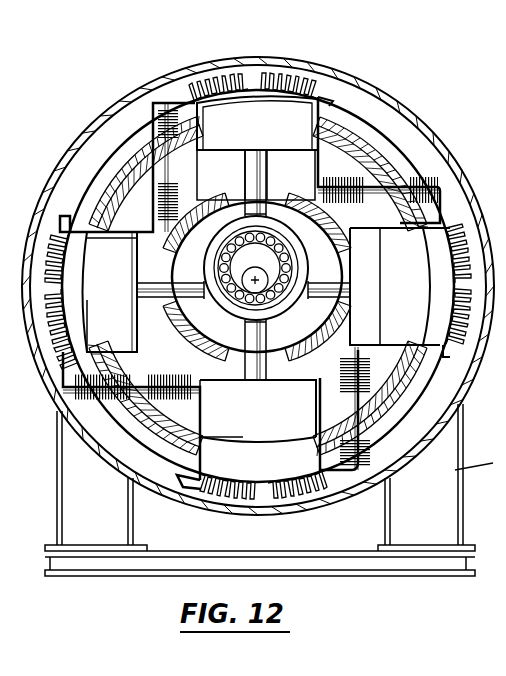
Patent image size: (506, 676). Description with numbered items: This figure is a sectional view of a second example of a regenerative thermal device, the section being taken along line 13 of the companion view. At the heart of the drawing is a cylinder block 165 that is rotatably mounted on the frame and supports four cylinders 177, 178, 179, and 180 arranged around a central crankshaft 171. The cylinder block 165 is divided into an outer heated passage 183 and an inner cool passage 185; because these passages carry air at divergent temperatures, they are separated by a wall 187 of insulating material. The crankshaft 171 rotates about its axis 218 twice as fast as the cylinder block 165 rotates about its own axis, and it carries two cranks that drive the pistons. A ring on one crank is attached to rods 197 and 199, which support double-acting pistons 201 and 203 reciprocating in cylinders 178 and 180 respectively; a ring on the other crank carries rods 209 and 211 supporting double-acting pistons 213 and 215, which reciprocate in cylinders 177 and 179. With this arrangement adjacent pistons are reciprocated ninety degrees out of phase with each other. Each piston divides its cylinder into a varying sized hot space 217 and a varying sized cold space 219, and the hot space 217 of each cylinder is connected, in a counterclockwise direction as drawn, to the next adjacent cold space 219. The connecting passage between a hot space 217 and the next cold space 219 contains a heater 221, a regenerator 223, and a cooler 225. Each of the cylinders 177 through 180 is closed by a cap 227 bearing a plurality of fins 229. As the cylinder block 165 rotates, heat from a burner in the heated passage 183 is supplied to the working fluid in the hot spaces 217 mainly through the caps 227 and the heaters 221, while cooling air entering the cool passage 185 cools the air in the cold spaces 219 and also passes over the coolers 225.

The section line 13 is at (263, 598).
The cylinder block 165 is at (322, 347).
The crankshaft 171 is at (238, 290).
The cylinder 177 is at (328, 122).
The cylinder 178 is at (80, 228).
The cylinder 179 is at (197, 458).
The cylinder 180 is at (412, 365).
The outer heated passage 183 is at (423, 142).
The inner cool passage 185 is at (357, 167).
The insulating wall 187 is at (353, 152).
The rod 197 is at (160, 276).
The rod 199 is at (372, 290).
The double-acting piston 201 is at (110, 292).
The double-acting piston 203 is at (410, 286).
The rod 209 is at (298, 186).
The rod 211 is at (247, 345).
The double-acting piston 213 is at (257, 123).
The double-acting piston 215 is at (258, 411).
The hot space 217 is at (290, 97).
The crankshaft axis 218 is at (265, 272).
The cold space 219 is at (241, 413).
The heater 221 is at (152, 108).
The regenerator 223 is at (152, 148).
The cooler 225 is at (135, 234).
The cap 227 is at (350, 90).
The fins 229 is at (331, 80).